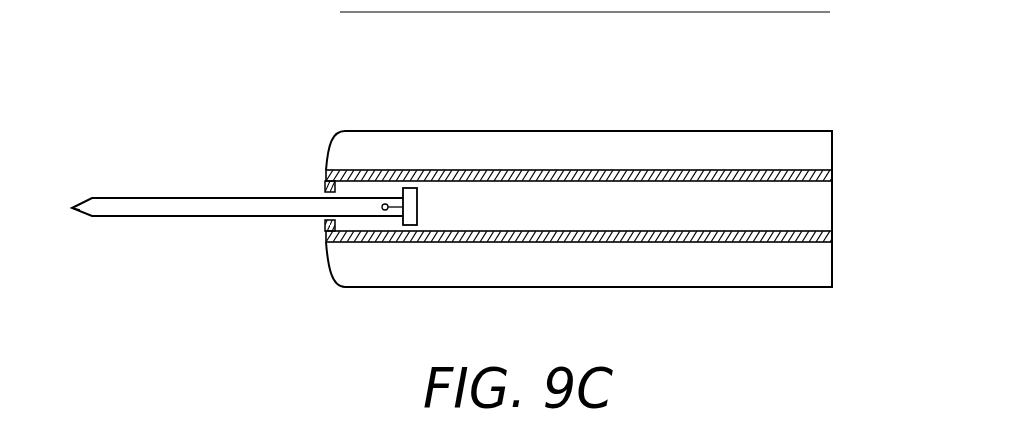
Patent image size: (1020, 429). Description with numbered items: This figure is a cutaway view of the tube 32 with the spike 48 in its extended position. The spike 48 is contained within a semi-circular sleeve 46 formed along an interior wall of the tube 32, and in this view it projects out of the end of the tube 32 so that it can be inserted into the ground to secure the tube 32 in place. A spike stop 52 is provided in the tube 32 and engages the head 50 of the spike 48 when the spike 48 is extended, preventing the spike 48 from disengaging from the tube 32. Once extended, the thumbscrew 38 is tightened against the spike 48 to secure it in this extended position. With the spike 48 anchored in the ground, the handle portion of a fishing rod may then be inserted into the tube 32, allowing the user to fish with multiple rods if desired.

The tube 32 is at (623, 113).
The semi-circular sleeve 46 is at (547, 220).
The spike stop 52 is at (323, 178).
The spike 48 is at (86, 220).
The thumbscrew 38 is at (417, 202).
The head 50 is at (412, 195).